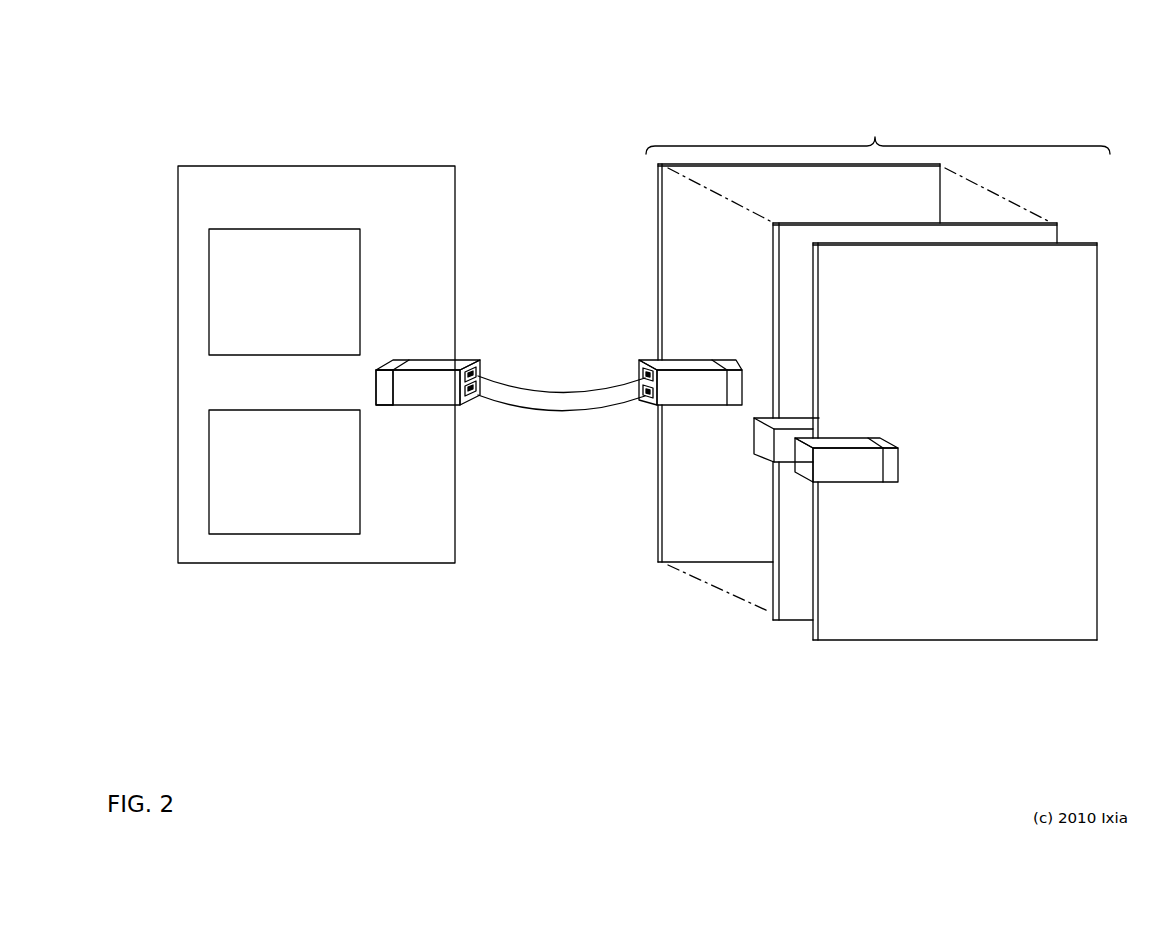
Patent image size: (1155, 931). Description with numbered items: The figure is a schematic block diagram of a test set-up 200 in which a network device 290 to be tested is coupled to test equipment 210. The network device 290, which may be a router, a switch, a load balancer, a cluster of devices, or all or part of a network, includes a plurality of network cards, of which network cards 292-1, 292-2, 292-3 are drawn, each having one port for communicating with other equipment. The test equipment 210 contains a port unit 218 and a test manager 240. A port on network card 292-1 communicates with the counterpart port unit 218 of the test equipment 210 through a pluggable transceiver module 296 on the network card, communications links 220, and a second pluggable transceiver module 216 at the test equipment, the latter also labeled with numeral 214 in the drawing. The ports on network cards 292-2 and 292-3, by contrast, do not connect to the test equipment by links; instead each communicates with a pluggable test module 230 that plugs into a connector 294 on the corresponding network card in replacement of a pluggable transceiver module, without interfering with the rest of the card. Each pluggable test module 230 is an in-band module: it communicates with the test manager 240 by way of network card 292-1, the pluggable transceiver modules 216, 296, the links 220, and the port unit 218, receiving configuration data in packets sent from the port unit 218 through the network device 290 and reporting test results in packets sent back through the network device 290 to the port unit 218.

The test set-up 200 is at (142, 55).
The test equipment 210 is at (316, 364).
The port unit 218 is at (284, 292).
The test manager 240 is at (284, 472).
The port 214 is at (385, 405).
The pluggable transceiver module 216 is at (422, 405).
The communications links 220 is at (611, 406).
The network device 290 is at (836, 388).
The network card 292-1 is at (693, 565).
The network card 292-2 is at (795, 621).
The network card 292-3 is at (945, 641).
The connector 294 is at (716, 360).
The pluggable transceiver module 296 is at (676, 360).
The pluggable test module 230 is at (785, 463).